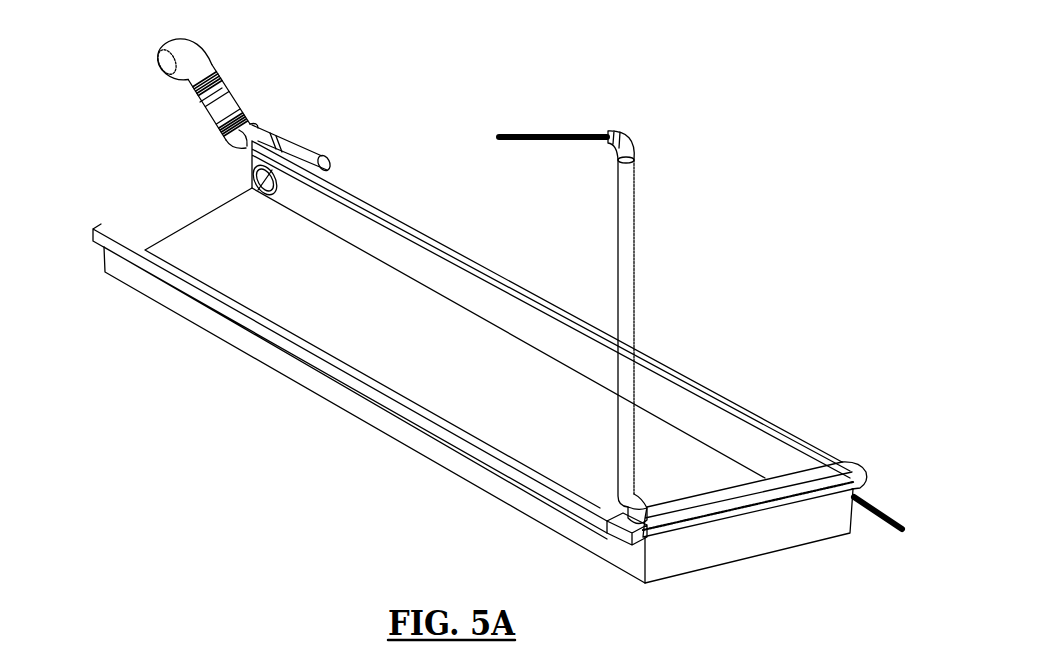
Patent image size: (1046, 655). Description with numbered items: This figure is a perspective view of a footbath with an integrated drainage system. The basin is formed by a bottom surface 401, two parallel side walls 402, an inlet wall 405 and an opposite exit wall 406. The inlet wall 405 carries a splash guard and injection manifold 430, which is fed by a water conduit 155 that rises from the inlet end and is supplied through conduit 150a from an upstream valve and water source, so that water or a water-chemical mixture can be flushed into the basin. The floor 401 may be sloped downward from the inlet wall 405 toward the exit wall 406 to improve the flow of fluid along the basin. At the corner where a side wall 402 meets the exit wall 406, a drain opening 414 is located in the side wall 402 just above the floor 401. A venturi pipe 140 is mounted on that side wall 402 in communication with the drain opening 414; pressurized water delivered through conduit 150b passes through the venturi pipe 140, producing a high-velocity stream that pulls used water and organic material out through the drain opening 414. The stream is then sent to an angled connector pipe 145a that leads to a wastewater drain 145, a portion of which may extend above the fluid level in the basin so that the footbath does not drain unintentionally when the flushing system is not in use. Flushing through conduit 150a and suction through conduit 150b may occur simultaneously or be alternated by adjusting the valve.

The venturi pipe 140 is at (302, 155).
The wastewater drain 145 is at (197, 53).
The angled connector pipe 145a is at (223, 92).
The conduit 150a is at (568, 130).
The conduit 150b is at (885, 510).
The water conduit 155 is at (627, 305).
The bottom surface 401 is at (478, 345).
The side walls 402 is at (693, 410).
The inlet wall 405 is at (750, 543).
The exit wall 406 is at (138, 218).
The drain opening 414 is at (265, 192).
The splash guard and injection manifold 430 is at (743, 493).